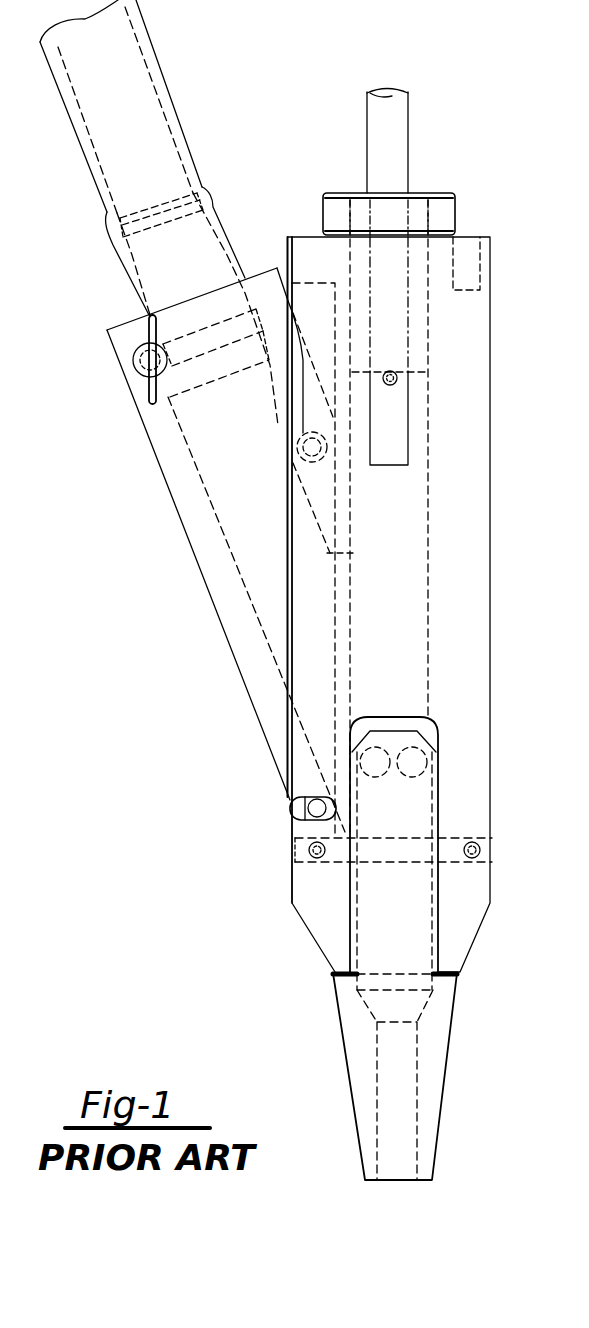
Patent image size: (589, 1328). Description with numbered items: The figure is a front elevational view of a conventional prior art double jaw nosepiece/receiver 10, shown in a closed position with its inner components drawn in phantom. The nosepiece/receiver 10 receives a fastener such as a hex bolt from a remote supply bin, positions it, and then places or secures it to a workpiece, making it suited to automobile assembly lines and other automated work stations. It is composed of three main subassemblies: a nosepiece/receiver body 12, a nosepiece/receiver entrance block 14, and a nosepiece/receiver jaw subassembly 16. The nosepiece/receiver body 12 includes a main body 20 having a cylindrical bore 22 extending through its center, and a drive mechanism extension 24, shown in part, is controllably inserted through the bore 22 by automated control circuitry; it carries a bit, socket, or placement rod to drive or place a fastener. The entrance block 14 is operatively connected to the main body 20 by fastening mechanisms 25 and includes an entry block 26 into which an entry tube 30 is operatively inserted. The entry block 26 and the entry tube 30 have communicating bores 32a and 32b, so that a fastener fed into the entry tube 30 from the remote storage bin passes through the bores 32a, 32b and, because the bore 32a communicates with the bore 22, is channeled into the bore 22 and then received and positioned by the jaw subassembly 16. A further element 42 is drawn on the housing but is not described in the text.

The double jaw nosepiece/receiver 10 is at (314, 590).
The nosepiece/receiver body 12 is at (507, 363).
The nosepiece/receiver entrance block 14 is at (195, 585).
The nosepiece/receiver jaw subassembly 16 is at (462, 1032).
The main body 20 is at (470, 493).
The cylindrical bore 22 is at (403, 557).
The drive mechanism extension 24 is at (390, 147).
The fastening mechanisms 25 is at (256, 275).
The entry block 26 is at (243, 643).
The entry tube 30 is at (118, 256).
The bore of the entry block 32a is at (218, 417).
The bore of the entry tube 32b is at (140, 142).
The clamp block 42 is at (469, 853).